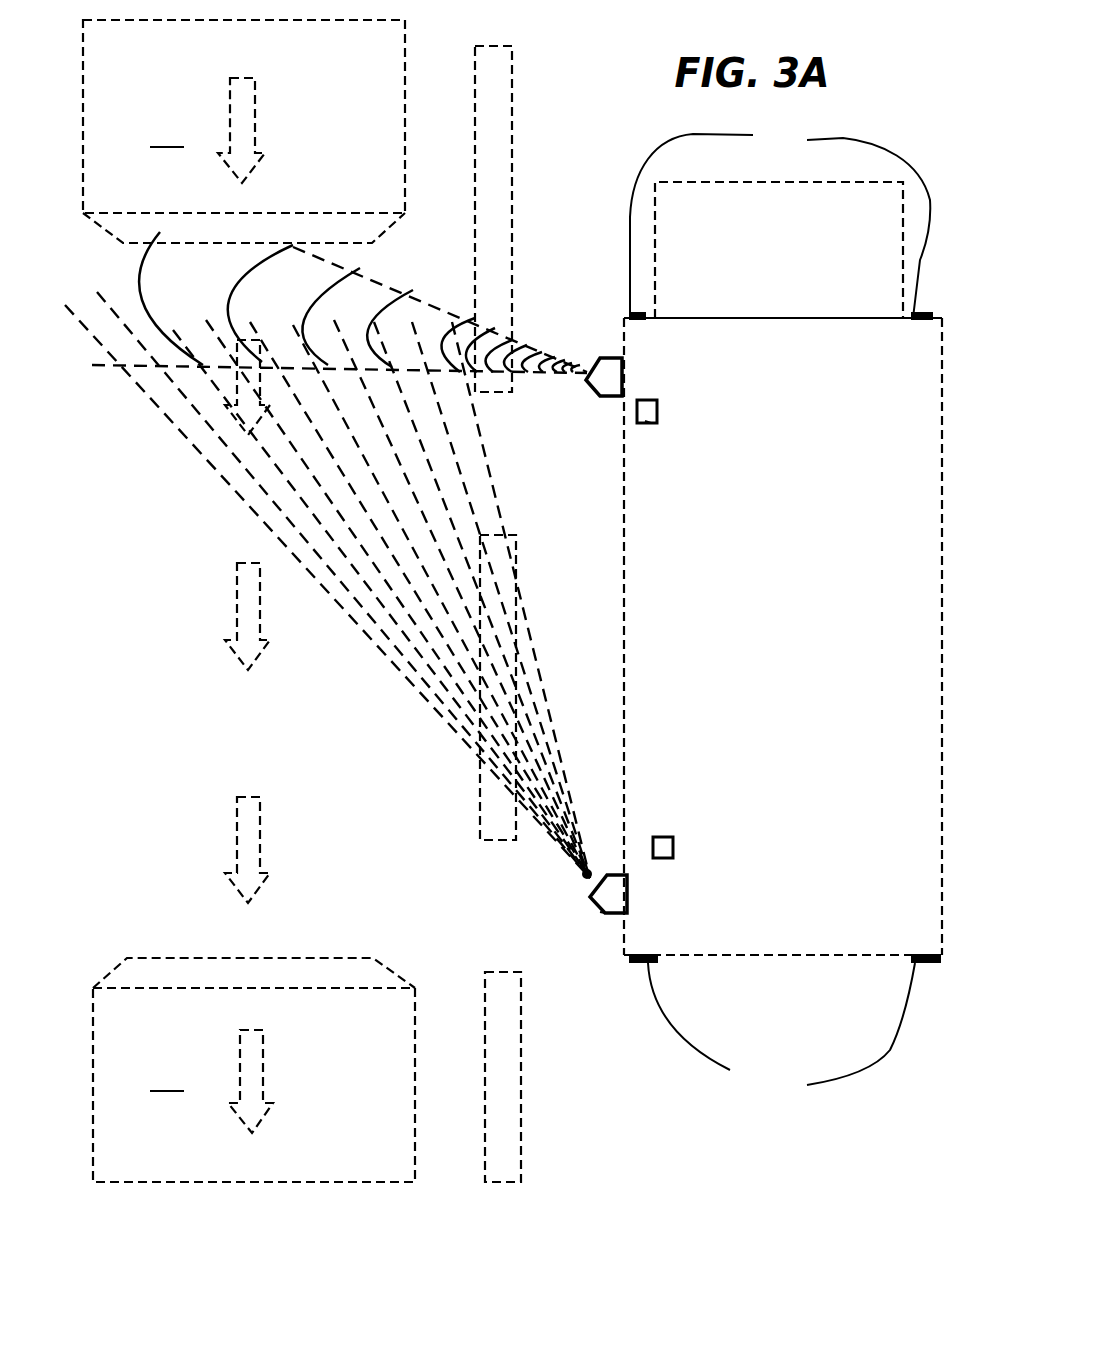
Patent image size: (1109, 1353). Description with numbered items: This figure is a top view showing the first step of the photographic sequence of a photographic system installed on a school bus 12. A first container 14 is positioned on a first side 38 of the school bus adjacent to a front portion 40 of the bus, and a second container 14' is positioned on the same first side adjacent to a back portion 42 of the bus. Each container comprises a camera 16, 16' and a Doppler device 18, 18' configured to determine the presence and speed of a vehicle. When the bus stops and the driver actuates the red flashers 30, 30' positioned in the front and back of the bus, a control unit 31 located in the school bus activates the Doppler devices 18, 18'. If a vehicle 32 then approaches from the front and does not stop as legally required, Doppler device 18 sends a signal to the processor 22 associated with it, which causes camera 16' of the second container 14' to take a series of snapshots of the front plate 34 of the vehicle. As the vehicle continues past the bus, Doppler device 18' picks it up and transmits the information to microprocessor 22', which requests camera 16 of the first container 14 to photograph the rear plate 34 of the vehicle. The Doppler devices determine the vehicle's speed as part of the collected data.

The school bus 12 is at (780, 569).
The first container 14 is at (667, 376).
The second container 14' is at (671, 857).
The camera 16 is at (346, 361).
The camera 16' is at (329, 609).
The Doppler device 18 is at (363, 302).
The Doppler device 18' is at (590, 954).
The processor 22 is at (710, 422).
The microprocessor 22' is at (698, 802).
The flashers 30 is at (780, 218).
The flashers 30' is at (781, 1031).
The control unit 31 is at (650, 423).
The vehicle 32 is at (249, 601).
The front plate / rear plate 34 is at (158, 233).
The first side 38 is at (623, 642).
The front portion 40 is at (728, 318).
The back portion 42 is at (832, 958).